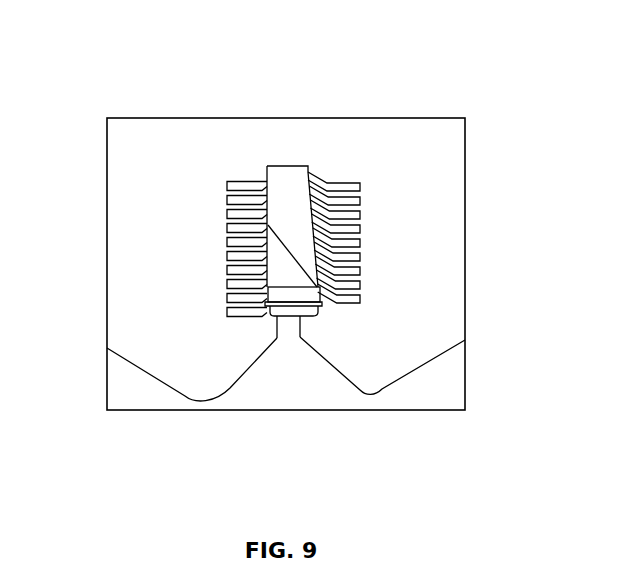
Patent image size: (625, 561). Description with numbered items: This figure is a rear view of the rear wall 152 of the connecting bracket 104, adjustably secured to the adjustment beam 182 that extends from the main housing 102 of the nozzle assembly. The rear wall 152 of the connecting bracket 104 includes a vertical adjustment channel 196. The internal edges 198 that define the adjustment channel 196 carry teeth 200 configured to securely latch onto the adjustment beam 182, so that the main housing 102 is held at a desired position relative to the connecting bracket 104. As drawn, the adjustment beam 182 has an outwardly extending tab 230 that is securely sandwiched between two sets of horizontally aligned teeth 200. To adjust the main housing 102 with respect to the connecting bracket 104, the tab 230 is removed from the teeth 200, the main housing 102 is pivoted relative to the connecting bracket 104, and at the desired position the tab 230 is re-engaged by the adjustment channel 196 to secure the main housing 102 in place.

The connecting bracket 104 is at (168, 112).
The rear wall 152 is at (425, 150).
The adjustment channel 196 is at (278, 182).
The main housing 102 is at (293, 210).
The internal edges 198 is at (348, 257).
The teeth 200 is at (233, 230).
The tab 230 is at (318, 313).
The adjustment beam 182 is at (290, 307).